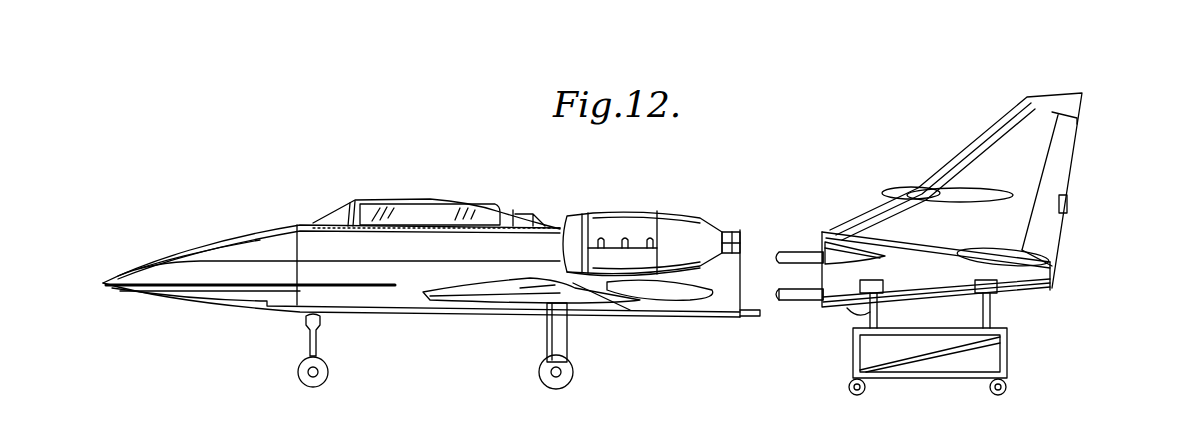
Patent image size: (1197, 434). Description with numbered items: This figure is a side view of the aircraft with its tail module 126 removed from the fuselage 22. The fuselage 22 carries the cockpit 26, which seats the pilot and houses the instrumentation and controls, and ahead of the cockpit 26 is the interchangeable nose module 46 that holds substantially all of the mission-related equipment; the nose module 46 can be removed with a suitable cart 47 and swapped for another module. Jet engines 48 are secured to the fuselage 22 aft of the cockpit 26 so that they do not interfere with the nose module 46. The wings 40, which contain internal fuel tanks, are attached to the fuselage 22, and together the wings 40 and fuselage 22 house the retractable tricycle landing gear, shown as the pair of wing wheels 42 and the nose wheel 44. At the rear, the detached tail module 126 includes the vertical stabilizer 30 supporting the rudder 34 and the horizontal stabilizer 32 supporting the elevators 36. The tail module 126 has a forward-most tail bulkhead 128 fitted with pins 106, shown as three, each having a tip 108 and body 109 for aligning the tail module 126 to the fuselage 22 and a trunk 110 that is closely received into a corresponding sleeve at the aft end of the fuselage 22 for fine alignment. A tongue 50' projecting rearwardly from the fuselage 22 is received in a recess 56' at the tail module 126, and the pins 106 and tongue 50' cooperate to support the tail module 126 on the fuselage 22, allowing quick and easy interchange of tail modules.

The fuselage 22 is at (318, 222).
The cockpit 26 is at (448, 203).
The vertical stabilizer 30 is at (1048, 106).
The horizontal stabilizer 32 is at (947, 205).
The rudder 34 is at (1067, 140).
The elevators 36 is at (1002, 188).
The wings 40 is at (530, 300).
The wing wheels 42 is at (562, 342).
The nose wheel 44 is at (310, 350).
The nose module 46 is at (250, 242).
The cart 47 is at (1007, 350).
The jet engines 48 is at (617, 225).
The tongue 50' is at (707, 337).
The recess 56' is at (836, 348).
The pins 106 is at (779, 252).
The tip 108 is at (778, 298).
The body 109 is at (793, 289).
The trunk 110 is at (815, 300).
The tail module 126 is at (912, 152).
The tail bulkhead 128 is at (826, 240).